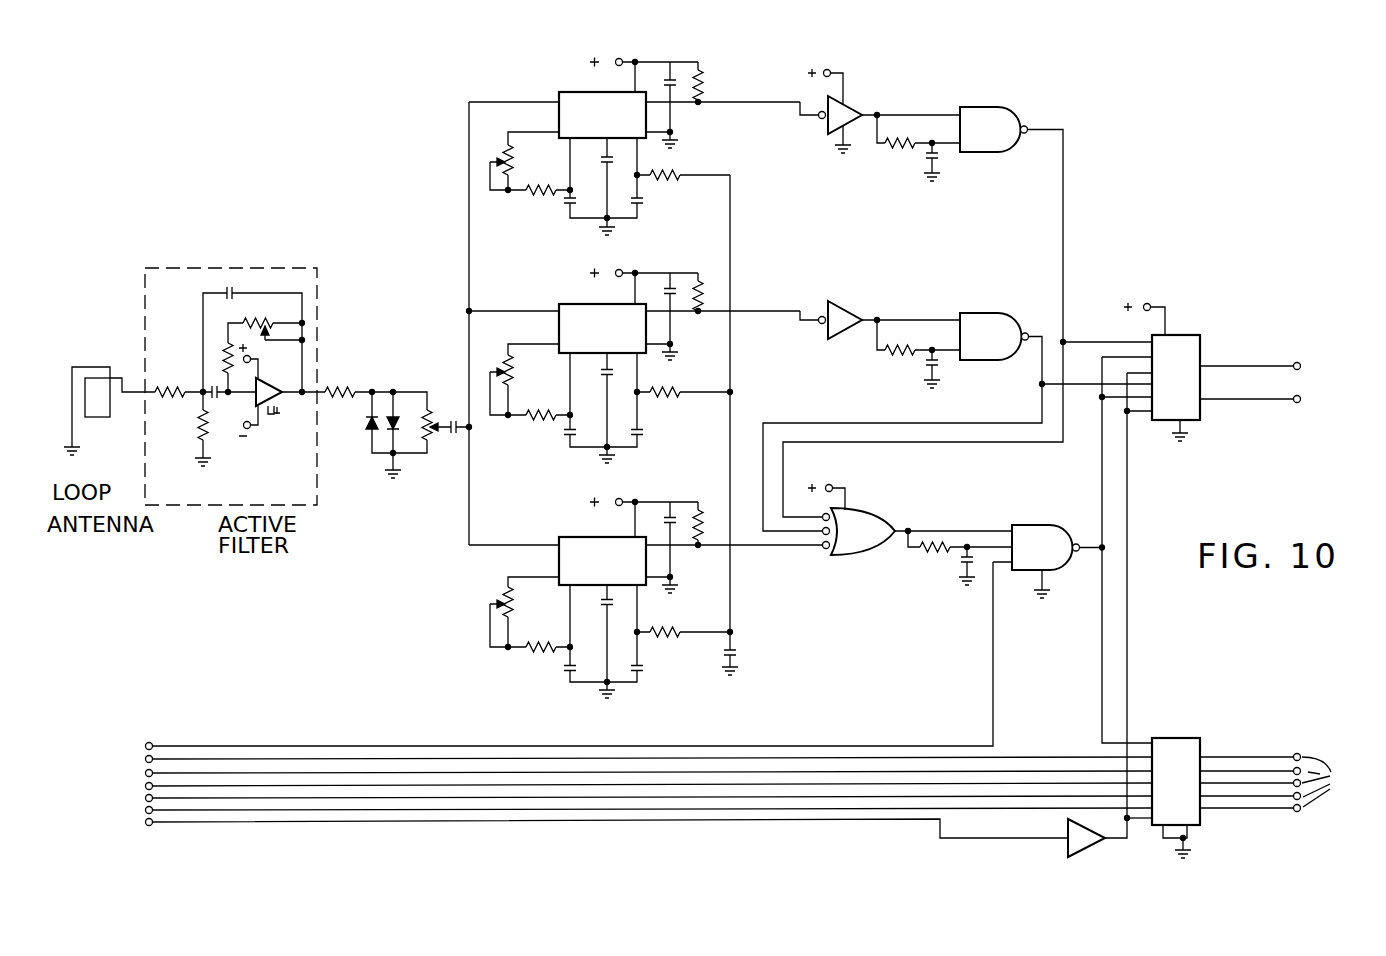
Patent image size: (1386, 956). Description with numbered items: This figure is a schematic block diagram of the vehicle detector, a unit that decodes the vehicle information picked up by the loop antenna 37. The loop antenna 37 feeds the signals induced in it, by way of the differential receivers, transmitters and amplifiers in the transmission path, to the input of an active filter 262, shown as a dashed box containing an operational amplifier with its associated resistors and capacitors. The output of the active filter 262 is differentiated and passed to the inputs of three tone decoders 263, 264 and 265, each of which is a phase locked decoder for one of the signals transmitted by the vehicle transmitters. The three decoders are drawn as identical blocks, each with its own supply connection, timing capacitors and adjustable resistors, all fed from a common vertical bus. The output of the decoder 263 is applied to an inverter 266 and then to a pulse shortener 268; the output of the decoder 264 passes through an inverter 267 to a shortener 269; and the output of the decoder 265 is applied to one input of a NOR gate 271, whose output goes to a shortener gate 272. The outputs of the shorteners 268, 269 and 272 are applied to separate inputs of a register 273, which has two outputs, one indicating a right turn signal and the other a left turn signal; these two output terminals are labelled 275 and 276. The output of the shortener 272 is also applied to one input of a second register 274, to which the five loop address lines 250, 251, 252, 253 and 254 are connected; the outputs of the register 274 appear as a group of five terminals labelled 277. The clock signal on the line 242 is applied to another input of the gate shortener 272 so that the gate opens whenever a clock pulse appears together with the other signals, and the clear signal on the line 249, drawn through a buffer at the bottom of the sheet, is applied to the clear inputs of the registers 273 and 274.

The loop antenna 37 is at (102, 385).
The active filter 262 is at (317, 314).
The tone decoder 263 is at (582, 102).
The tone decoder 264 is at (563, 314).
The tone decoder 265 is at (568, 547).
The inverter 266 is at (853, 111).
The inverter 267 is at (853, 316).
The pulse shortener 268 is at (1013, 117).
The shortener 269 is at (1009, 319).
The NOR gate 271 is at (870, 525).
The shortener gate 272 is at (1039, 533).
The register 273 is at (1186, 348).
The register 274 is at (1193, 750).
The output terminal 275 is at (1301, 367).
The output terminal 276 is at (1301, 400).
The output lines 277 is at (1291, 783).
The clock signal line 242 is at (154, 743).
The clear signal line 249 is at (155, 827).
The loop address line 250 is at (145, 759).
The loop address line 251 is at (145, 773).
The loop address line 252 is at (145, 787).
The loop address line 253 is at (145, 803).
The loop address line 254 is at (146, 814).